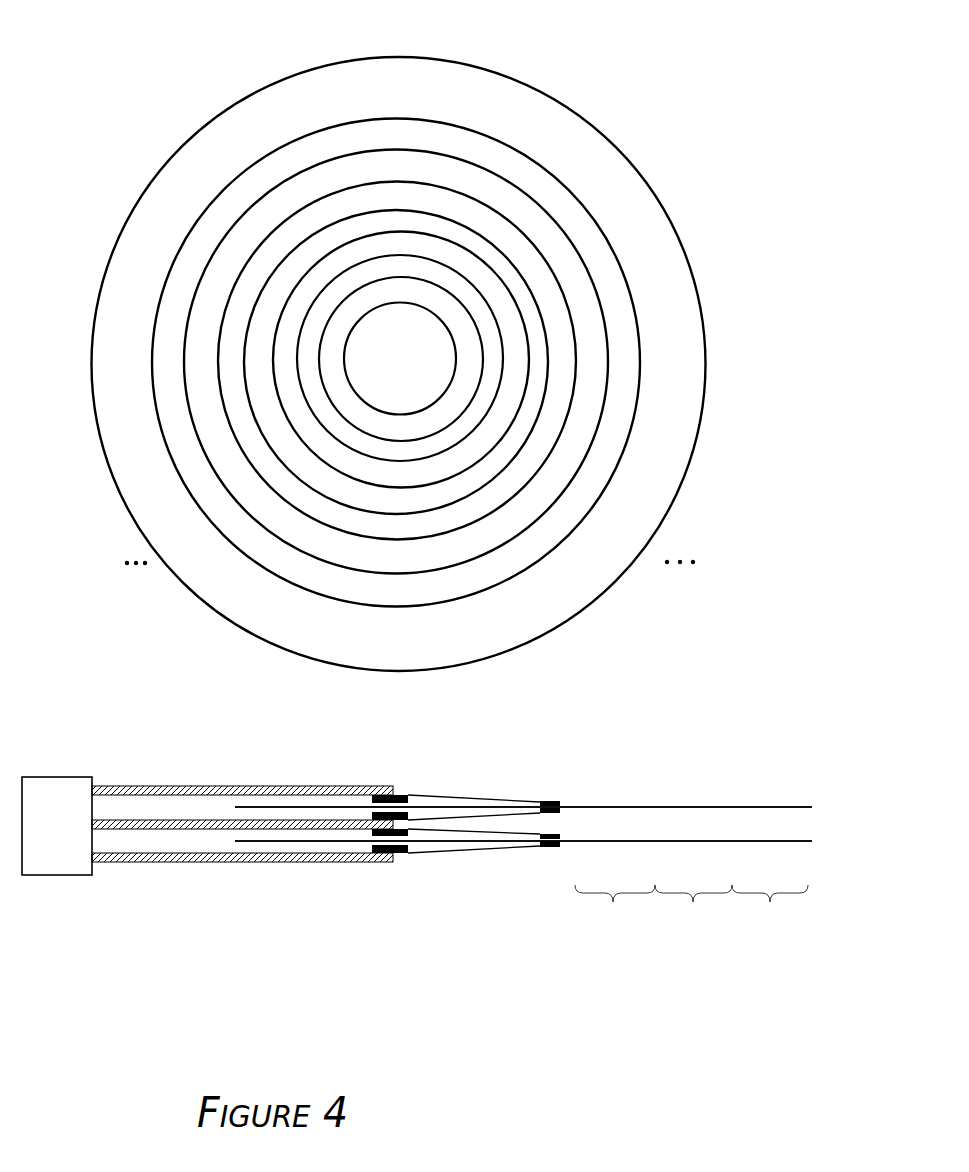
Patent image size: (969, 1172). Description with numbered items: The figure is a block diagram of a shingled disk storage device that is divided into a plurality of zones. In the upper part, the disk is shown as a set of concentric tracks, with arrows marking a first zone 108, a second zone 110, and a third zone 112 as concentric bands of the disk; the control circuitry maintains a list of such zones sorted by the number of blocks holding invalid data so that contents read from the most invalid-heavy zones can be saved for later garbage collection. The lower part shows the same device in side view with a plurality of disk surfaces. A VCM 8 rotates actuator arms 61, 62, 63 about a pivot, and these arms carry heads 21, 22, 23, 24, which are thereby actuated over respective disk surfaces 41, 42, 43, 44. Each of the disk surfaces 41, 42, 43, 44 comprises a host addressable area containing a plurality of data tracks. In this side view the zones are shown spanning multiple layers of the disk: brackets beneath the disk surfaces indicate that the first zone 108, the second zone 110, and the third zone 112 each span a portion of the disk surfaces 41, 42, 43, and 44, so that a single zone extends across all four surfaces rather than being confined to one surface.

The zone 1 108 is at (470, 138).
The zone 2 110 is at (403, 168).
The zone 3 112 is at (475, 209).
The VCM 8 is at (57, 777).
The actuator arm 61 is at (145, 786).
The actuator arm 62 is at (185, 820).
The actuator arm 63 is at (221, 853).
The head 21 is at (549, 802).
The head 22 is at (540, 811).
The head 23 is at (541, 840).
The head 24 is at (549, 847).
The disk surface 41 is at (704, 807).
The disk surface 42 is at (740, 808).
The disk surface 43 is at (744, 841).
The disk surface 44 is at (752, 841).